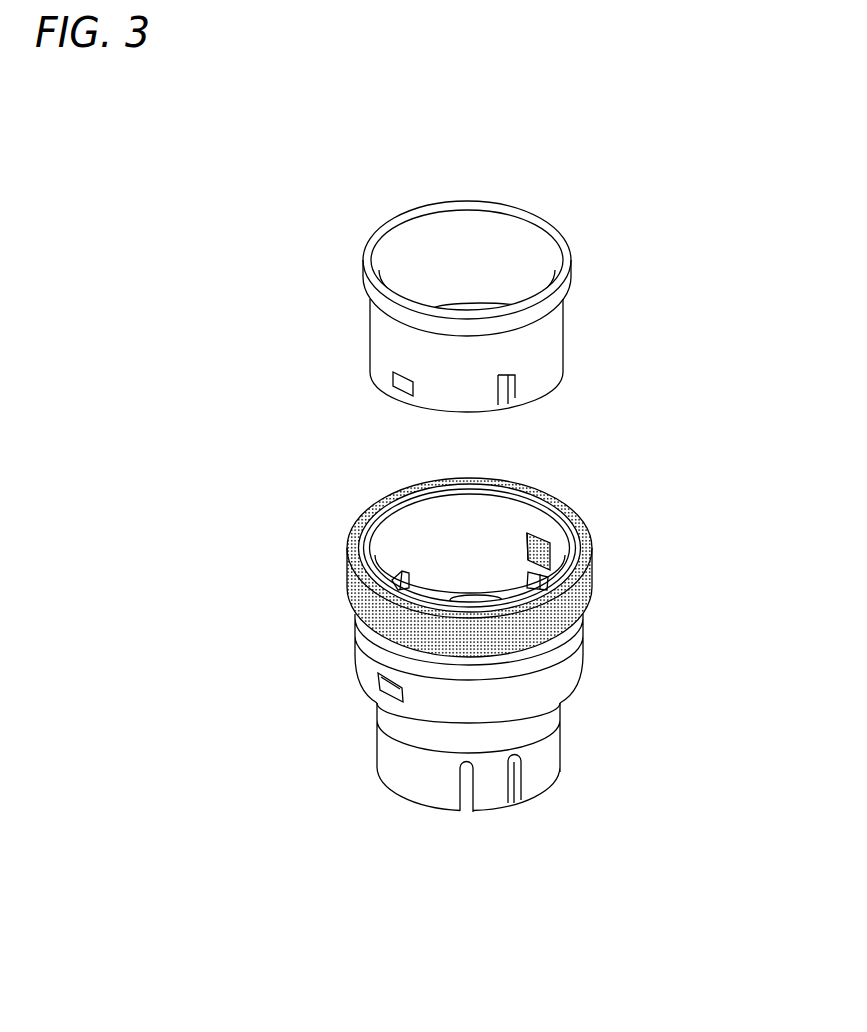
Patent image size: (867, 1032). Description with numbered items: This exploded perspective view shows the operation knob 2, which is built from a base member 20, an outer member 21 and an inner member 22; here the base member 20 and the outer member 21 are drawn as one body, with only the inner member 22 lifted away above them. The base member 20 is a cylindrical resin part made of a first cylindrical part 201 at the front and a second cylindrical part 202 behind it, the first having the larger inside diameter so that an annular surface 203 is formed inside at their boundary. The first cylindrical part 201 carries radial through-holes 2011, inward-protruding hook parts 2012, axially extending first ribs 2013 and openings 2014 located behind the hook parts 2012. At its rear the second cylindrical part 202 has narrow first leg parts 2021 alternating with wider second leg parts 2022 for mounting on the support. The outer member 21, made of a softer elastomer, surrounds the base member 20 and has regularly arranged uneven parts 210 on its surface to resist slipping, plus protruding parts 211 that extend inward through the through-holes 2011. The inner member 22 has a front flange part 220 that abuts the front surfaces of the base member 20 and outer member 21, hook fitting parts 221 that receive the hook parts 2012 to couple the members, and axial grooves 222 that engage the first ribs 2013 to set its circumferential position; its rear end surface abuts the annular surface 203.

The operation knob 2 is at (472, 517).
The inner member 22 is at (462, 314).
The flange part 220 is at (402, 313).
The hook fitting part 221 is at (394, 391).
The groove 222 is at (523, 398).
The outer member 21 is at (521, 567).
The uneven parts 210 is at (593, 606).
The protruding part 211 is at (550, 532).
The base member 20 is at (460, 657).
The first cylindrical part 201 is at (355, 645).
The through-hole 2011 is at (528, 532).
The hook part 2012 is at (528, 588).
The first rib 2013 is at (408, 567).
The opening 2014 is at (378, 685).
The annular surface 203 is at (443, 597).
The second cylindrical part 202 is at (565, 714).
The first leg part 2021 is at (493, 798).
The second leg part 2022 is at (417, 790).